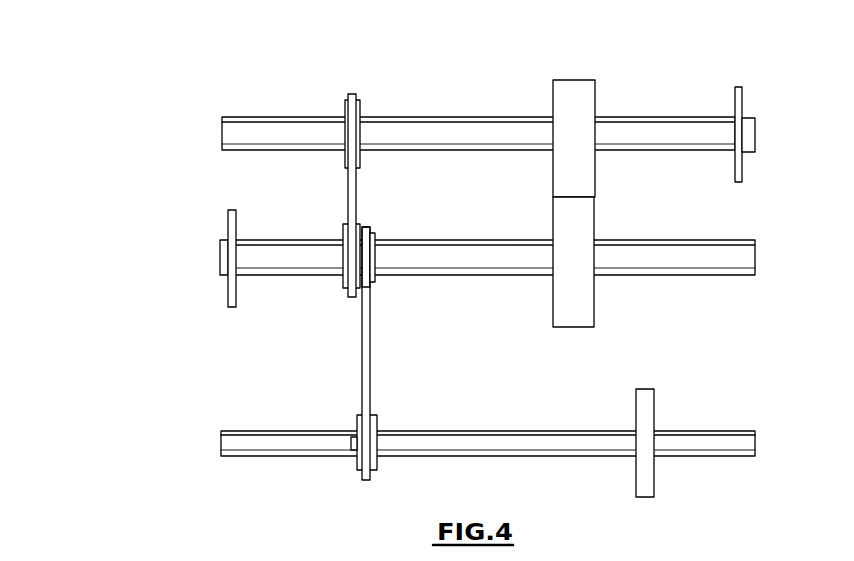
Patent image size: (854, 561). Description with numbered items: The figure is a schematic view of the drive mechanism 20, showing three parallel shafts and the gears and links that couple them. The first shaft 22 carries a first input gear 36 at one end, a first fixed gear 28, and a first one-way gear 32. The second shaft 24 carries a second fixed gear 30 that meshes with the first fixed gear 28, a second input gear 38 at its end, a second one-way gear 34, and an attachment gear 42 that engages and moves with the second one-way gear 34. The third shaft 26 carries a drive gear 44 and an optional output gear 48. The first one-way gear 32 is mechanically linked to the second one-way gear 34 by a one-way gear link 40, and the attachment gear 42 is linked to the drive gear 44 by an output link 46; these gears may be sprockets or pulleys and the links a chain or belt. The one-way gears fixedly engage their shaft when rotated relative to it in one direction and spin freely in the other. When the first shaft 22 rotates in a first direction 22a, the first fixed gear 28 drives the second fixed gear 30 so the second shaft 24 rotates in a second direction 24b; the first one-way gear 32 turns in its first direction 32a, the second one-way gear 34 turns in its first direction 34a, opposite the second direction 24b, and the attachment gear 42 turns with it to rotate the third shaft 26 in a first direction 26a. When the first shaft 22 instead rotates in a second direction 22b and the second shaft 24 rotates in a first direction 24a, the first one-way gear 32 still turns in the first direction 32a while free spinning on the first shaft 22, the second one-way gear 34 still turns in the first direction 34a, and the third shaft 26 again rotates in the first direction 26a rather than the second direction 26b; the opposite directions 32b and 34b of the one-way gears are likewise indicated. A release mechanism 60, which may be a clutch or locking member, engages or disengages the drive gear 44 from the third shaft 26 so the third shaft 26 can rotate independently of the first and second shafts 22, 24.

The drive mechanism 20 is at (178, 66).
The first shaft 22 is at (640, 117).
The first direction 22a is at (196, 174).
The second direction 22b is at (208, 170).
The second shaft 24 is at (683, 275).
The first direction 24a is at (158, 292).
The second direction 24b is at (170, 288).
The third shaft 26 is at (737, 431).
The first direction 26a is at (185, 474).
The second direction 26b is at (197, 470).
The first fixed gear 28 is at (572, 87).
The second fixed gear 30 is at (575, 327).
The first one-way gear 32 is at (359, 100).
The first direction 32a is at (281, 172).
The second direction 32b is at (293, 168).
The second one-way gear 34 is at (349, 297).
The first direction 34a is at (283, 292).
The second direction 34b is at (295, 288).
The first input gear 36 is at (742, 90).
The second input gear 38 is at (232, 308).
The one-way gear link 40 is at (347, 199).
The attachment gear 42 is at (375, 233).
The drive gear 44 is at (374, 467).
The output link 46 is at (371, 357).
The output gear 48 is at (655, 488).
The release mechanism 60 is at (351, 441).